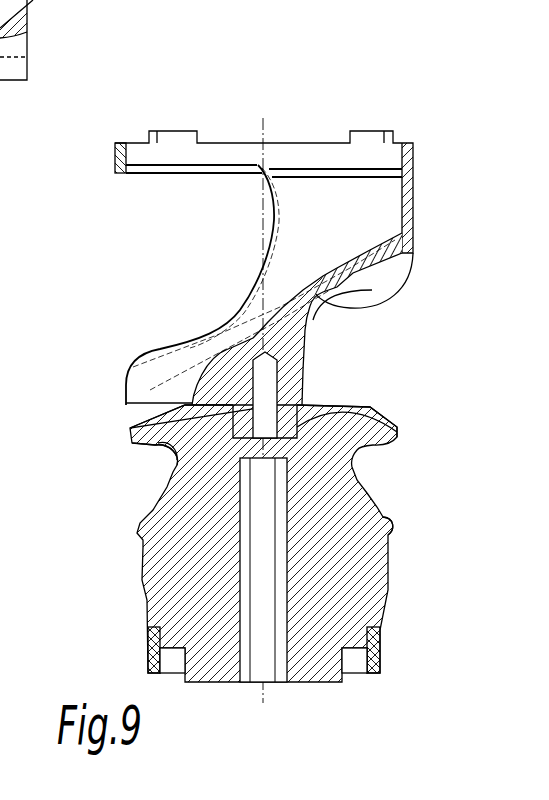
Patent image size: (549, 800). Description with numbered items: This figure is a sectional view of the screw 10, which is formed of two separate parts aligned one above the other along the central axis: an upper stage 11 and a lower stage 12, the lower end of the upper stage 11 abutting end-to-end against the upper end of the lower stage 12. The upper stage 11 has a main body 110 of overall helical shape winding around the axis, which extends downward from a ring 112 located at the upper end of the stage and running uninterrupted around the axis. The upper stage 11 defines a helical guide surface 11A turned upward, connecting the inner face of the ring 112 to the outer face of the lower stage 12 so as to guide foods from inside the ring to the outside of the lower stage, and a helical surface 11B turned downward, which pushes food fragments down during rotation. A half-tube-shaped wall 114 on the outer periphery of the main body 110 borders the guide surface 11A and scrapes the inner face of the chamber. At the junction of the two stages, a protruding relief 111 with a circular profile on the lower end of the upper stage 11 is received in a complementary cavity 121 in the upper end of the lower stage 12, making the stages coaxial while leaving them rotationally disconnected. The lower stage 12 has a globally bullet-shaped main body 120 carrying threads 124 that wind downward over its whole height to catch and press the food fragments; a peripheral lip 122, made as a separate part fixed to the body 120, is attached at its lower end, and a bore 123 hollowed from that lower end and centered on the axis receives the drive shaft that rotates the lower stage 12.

The screw 10 is at (342, 95).
The upper stage 11 is at (419, 192).
The guide surface 11A is at (323, 275).
The helical surface 11B is at (348, 306).
The main body 110 is at (253, 307).
The protruding relief 111 is at (332, 407).
The ring 112 is at (124, 157).
The wall 114 is at (322, 198).
The lower stage 12 is at (393, 545).
The main body 120 is at (177, 570).
The cavity 121 is at (177, 467).
The peripheral lip 122 is at (147, 657).
The bore 123 is at (281, 652).
The threads 124 is at (392, 528).